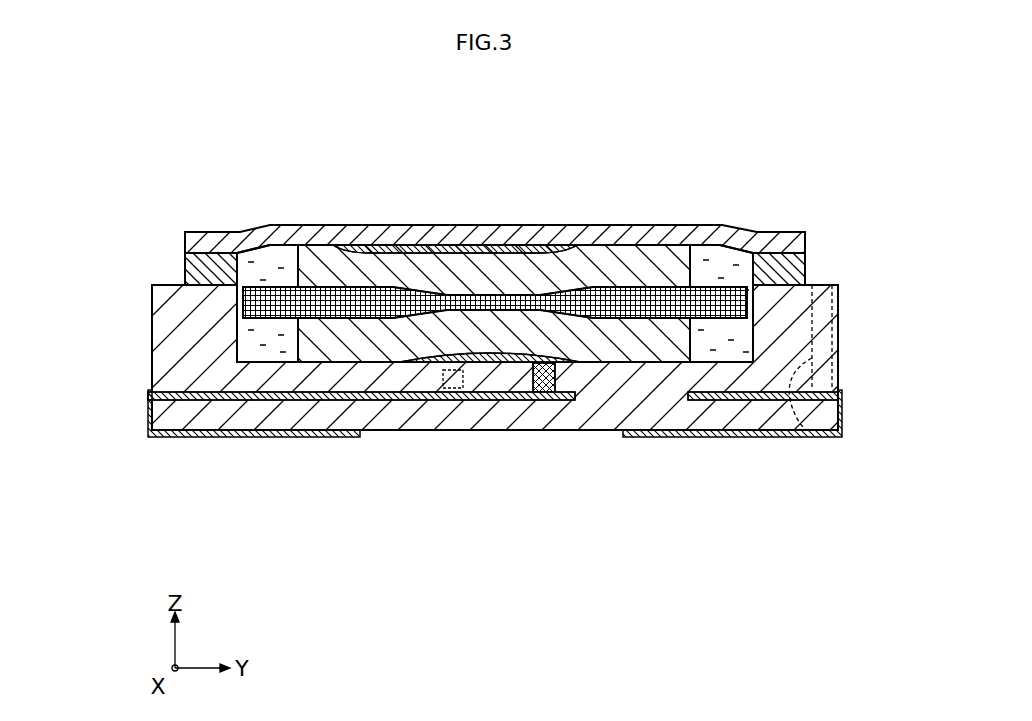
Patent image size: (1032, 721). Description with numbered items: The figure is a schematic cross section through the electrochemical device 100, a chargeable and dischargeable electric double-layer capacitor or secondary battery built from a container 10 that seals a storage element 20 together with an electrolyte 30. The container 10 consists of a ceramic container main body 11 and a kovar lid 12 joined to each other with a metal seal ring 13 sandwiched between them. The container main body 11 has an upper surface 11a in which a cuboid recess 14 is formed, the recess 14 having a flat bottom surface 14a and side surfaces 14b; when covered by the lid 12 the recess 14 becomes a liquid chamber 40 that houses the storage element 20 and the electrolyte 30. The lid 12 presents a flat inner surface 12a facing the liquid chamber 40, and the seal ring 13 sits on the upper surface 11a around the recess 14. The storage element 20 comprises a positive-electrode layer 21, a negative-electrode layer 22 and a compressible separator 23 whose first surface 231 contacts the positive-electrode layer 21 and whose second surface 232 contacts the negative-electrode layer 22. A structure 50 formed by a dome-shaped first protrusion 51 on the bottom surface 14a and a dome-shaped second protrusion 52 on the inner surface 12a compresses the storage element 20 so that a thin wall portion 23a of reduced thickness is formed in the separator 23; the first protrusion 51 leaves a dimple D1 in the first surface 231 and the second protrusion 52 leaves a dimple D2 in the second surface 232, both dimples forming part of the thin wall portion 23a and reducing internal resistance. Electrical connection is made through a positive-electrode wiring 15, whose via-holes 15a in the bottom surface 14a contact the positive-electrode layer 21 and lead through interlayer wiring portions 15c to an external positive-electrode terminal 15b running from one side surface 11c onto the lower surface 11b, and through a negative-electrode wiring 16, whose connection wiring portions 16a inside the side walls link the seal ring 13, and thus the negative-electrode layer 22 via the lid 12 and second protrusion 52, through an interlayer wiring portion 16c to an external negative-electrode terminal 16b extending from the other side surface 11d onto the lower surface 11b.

The electrochemical device 100 is at (721, 112).
The container 10 is at (96, 225).
The container main body 11 is at (162, 300).
The upper surface 11a is at (822, 286).
The lower surface 11b is at (610, 431).
The one side surface 11c is at (152, 370).
The other side surface 11d is at (838, 338).
The lid 12 is at (185, 245).
The inner surface 12a is at (338, 250).
The seal ring 13 is at (185, 270).
The recess 14 is at (287, 484).
The bottom surface 14a is at (272, 358).
The side surfaces 14b is at (247, 345).
The positive-electrode wiring 15 is at (312, 494).
The via-holes 15a is at (442, 388).
The external positive-electrode terminal 15b is at (343, 432).
The interlayer wiring portions 15c is at (364, 363).
The negative-electrode wiring 16 is at (740, 499).
The connection wiring portions 16a is at (808, 433).
The external negative-electrode terminal 16b is at (838, 436).
The interlayer wiring portion 16c is at (770, 433).
The storage element 20 is at (570, 151).
The positive-electrode layer 21 is at (662, 332).
The negative-electrode layer 22 is at (587, 252).
The separator 23 is at (640, 290).
The thin wall portion 23a is at (480, 330).
The first surface 231 is at (710, 433).
The second surface 232 is at (705, 268).
The electrolyte 30 is at (262, 262).
The liquid chamber 40 is at (735, 266).
The structure 50 is at (552, 162).
The first protrusion 51 is at (505, 305).
The second protrusion 52 is at (556, 300).
The dimple D1 is at (490, 350).
The dimple D2 is at (460, 286).